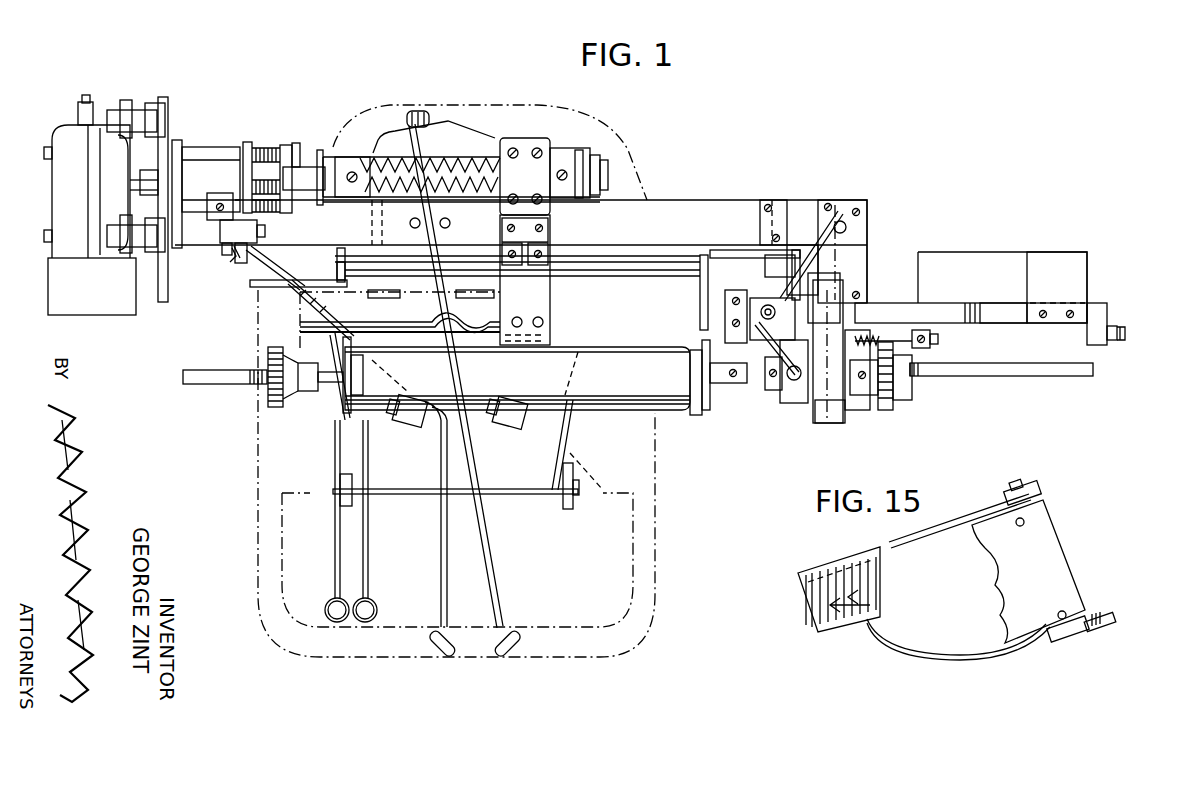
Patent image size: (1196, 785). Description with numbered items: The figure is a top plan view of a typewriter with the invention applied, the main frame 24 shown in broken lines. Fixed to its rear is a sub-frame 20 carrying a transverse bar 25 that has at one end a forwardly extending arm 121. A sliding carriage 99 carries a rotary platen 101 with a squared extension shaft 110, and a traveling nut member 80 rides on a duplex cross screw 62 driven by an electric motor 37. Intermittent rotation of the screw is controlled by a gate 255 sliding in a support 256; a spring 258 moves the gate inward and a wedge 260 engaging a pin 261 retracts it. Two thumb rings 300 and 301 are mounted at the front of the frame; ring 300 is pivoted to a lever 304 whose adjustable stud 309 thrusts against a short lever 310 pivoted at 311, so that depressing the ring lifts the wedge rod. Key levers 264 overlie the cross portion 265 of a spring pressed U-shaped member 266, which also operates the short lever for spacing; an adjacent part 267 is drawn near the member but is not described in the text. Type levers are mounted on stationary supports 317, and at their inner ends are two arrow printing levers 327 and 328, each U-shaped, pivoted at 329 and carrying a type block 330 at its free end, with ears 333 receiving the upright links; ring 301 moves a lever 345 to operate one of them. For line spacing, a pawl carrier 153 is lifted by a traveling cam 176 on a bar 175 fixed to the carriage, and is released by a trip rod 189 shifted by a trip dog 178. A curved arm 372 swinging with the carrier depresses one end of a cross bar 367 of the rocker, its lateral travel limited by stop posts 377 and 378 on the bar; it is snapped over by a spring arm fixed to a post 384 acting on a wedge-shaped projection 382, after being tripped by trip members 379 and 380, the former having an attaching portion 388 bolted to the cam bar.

In FIG. 1, the electric motor 37 is at (100, 298).
In FIG. 1, the duplex or cross screw 62 is at (448, 170).
In FIG. 1, the sub-frame 20 is at (493, 137).
In FIG. 1, the traveling nut member 80 is at (548, 143).
In FIG. 1, the main frame 24 is at (624, 152).
In FIG. 1, the transverse bar 25 is at (657, 208).
In FIG. 1, the stop post 378 is at (697, 222).
In FIG. 1, the trip member 380 is at (740, 253).
In FIG. 1, the arm 372 is at (843, 213).
In FIG. 1, the stop post 377 is at (868, 235).
In FIG. 1, the pawl carrier 153 is at (833, 283).
In FIG. 1, the forwardly extending arm 121 is at (860, 282).
In FIG. 1, the trip member 379 is at (983, 253).
In FIG. 1, the traveling cam 176 is at (942, 315).
In FIG. 1, the bar 175 is at (1003, 310).
In FIG. 1, the attaching portion 388 is at (1073, 278).
In FIG. 1, the trip rod 189 is at (933, 337).
In FIG. 1, the trip dog 178 is at (1070, 342).
In FIG. 1, the squared extension shaft 110 is at (1048, 375).
In FIG. 1, the support 256 is at (248, 247).
In FIG. 1, the pin 261 is at (225, 252).
In FIG. 1, the spring 258 is at (230, 262).
In FIG. 1, the manually controlled gate 255 is at (240, 268).
In FIG. 1, the wedge 260 is at (258, 252).
In FIG. 1, the short lever 310 is at (287, 295).
In FIG. 1, the adjustable stud 309 is at (303, 313).
In FIG. 1, the pivot 311 is at (340, 321).
In FIG. 1, the cross portion 265 is at (480, 326).
In FIG. 1, the cross bar 367 is at (723, 272).
In FIG. 1, the wedge-shaped projection 382 is at (750, 300).
In FIG. 1, the rotary platen 101 is at (667, 348).
In FIG. 1, the sliding carriage 99 is at (708, 392).
In FIG. 1, the post 384 is at (795, 380).
In FIG. 1, the stationary support 317 is at (475, 374).
In FIG. 15, the stationary support 317 is at (1035, 581).
In FIG. 1, the arrow printing lever 327 is at (398, 427).
In FIG. 15, the arrow printing lever 327 is at (897, 537).
In FIG. 1, the arrow printing lever 328 is at (507, 430).
In FIG. 1, the clamp 267 is at (577, 502).
In FIG. 1, the U-shaped member 266 is at (550, 497).
In FIG. 1, the key levers 264 is at (365, 555).
In FIG. 1, the lever 304 is at (442, 537).
In FIG. 1, the lever 345 is at (490, 575).
In FIG. 1, the thumb engaging element 300 is at (442, 653).
In FIG. 1, the thumb engaging element 301 is at (508, 658).
In FIG. 15, the pivot 329 is at (1018, 492).
In FIG. 15, the laterally projecting ear 333 is at (1113, 607).
In FIG. 15, the type block 330 is at (805, 570).